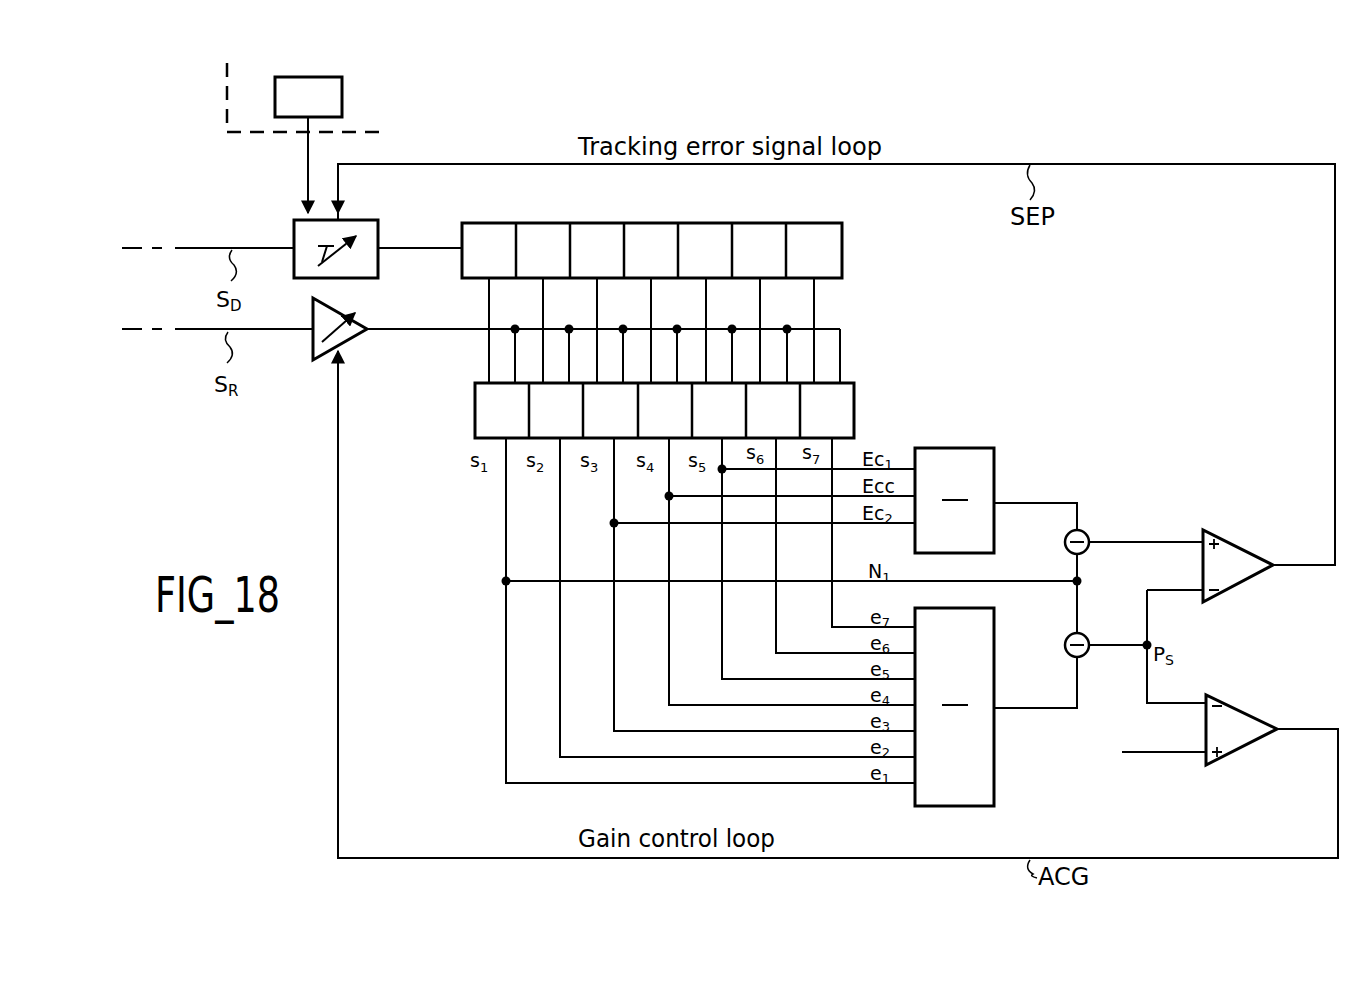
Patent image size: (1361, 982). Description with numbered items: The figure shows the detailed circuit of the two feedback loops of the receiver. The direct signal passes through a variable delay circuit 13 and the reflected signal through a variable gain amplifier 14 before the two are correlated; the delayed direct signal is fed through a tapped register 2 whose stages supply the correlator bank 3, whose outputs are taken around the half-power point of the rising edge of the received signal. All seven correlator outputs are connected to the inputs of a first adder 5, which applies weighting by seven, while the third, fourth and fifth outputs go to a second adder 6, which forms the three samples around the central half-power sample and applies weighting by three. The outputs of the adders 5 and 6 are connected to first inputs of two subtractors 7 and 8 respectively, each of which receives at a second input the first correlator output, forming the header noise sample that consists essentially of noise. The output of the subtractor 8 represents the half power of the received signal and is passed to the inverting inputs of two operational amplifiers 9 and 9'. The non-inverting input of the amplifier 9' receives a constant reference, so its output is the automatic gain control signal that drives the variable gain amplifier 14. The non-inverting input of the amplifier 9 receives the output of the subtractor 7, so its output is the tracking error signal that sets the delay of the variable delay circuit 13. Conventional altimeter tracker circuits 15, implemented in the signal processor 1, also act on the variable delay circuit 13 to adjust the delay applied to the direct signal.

The signal processor 1 is at (230, 140).
The shift register 2 is at (819, 220).
The correlator bank 3 is at (864, 376).
The first adder 5 is at (994, 783).
The second adder 6 is at (966, 448).
The subtractor 7 is at (1086, 533).
The subtractor 8 is at (1086, 636).
The operational amplifier 9 is at (1238, 546).
The operational amplifier 9' is at (1171, 708).
The variable delay circuit 13 is at (365, 218).
The variable gain amplifier 14 is at (313, 350).
The altimeter tracker circuits 15 is at (342, 81).